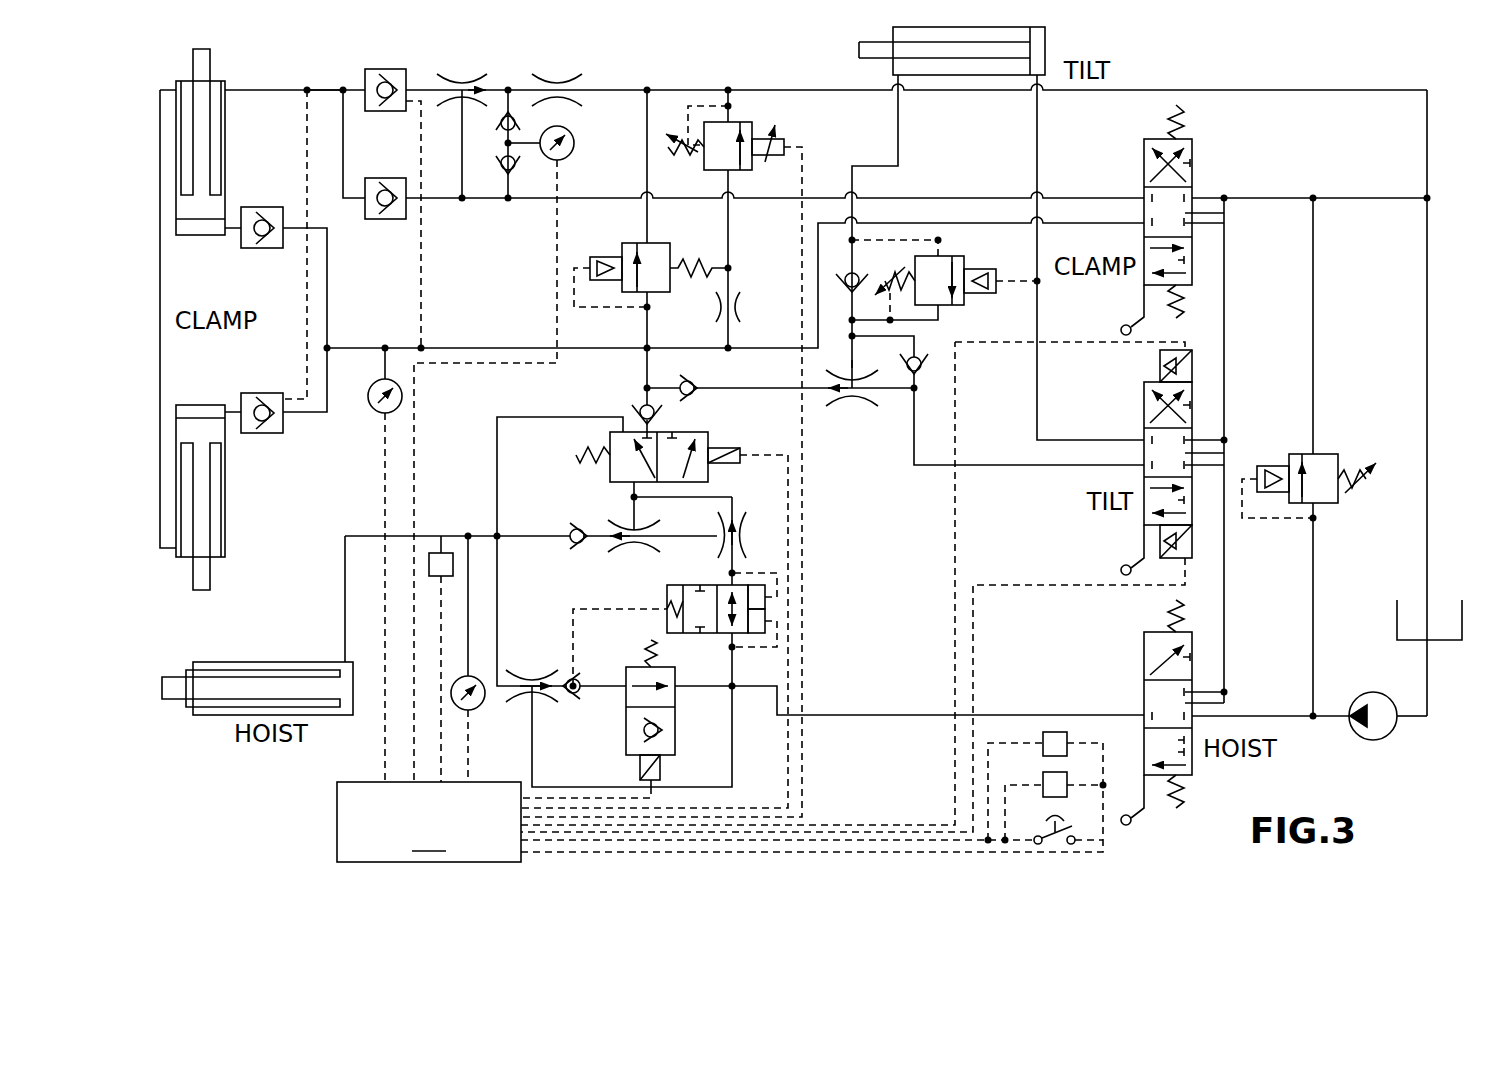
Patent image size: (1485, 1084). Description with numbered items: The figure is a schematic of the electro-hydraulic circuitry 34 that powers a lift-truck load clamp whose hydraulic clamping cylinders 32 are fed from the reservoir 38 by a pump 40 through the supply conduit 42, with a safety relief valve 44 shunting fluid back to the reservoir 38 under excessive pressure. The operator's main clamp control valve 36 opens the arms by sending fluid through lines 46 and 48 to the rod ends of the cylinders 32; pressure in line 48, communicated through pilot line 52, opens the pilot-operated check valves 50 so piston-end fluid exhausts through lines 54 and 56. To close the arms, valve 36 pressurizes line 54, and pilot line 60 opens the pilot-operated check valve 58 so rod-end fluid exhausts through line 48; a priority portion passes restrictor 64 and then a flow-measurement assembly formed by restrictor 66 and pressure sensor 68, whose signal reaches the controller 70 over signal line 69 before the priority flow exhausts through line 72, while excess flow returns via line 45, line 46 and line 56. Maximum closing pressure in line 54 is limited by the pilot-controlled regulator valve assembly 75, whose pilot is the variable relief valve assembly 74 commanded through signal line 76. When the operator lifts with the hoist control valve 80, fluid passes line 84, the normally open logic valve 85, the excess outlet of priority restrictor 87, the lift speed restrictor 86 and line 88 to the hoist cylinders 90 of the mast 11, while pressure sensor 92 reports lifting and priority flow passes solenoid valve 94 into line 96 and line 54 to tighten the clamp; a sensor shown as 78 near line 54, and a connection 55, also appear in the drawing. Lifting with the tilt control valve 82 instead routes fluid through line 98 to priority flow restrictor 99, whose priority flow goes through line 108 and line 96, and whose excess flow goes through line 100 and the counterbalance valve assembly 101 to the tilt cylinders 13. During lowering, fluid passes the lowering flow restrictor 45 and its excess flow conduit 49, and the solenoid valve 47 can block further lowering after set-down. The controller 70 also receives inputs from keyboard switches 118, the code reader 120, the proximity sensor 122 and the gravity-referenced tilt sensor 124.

The load-lifting mast 11 is at (210, 730).
The tilt cylinder 13 is at (1048, 40).
The hydraulic clamping cylinders 32 is at (203, 235).
The hydraulic circuitry 34 is at (330, 80).
The main clamp control valve 36 is at (1144, 163).
The reservoir 38 is at (1395, 620).
The pump 40 is at (1373, 742).
The supply conduit 42 is at (1273, 716).
The safety relief valve 44 is at (1320, 455).
The lowering flow restrictor 45 is at (532, 680).
The line 46 is at (828, 197).
The solenoid valve 47 is at (680, 718).
The line 48 is at (255, 88).
The excess flow conduit 49 is at (532, 752).
The pilot-operated check valves 50 is at (262, 207).
The pilot line 52 is at (307, 130).
The line 54 is at (360, 348).
The bypass line 55 is at (462, 184).
The line 56 is at (1270, 198).
The pilot-operated check valve 58 is at (385, 111).
The pilot line 60 is at (421, 263).
The restrictor 64 is at (462, 82).
The restrictor 66 is at (558, 82).
The pressure sensor 68 is at (575, 143).
The signal line 69 is at (414, 462).
The controller 70 is at (720, 602).
The line 72 is at (765, 88).
The variable relief valve assembly 74 is at (718, 172).
The pressure regulator valve assembly 75 is at (625, 243).
The signal line 76 is at (802, 495).
The pressure sensor 78 is at (402, 396).
The hoist control valve 80 is at (1144, 650).
The tilt control valve 82 is at (1144, 405).
The line 84 is at (890, 715).
The logic valve 85 is at (765, 607).
The lift speed restrictor 86 is at (634, 560).
The priority restrictor 87 is at (745, 545).
The line 88 is at (355, 536).
The hoist cylinders 90 is at (262, 662).
The pressure sensor 92 is at (482, 708).
The solenoid valve 94 is at (598, 482).
The line 96 is at (647, 372).
The line 98 is at (1000, 465).
The priority flow restrictor 99 is at (852, 405).
The line 100 is at (851, 365).
The counterbalance valve assembly 101 is at (975, 310).
The line 108 is at (765, 393).
The keyboard switches 118 is at (1060, 820).
The electronic code reader 120 is at (1043, 782).
The proximity sensor 122 is at (1055, 732).
The gravity-referenced tilt sensor 124 is at (441, 553).